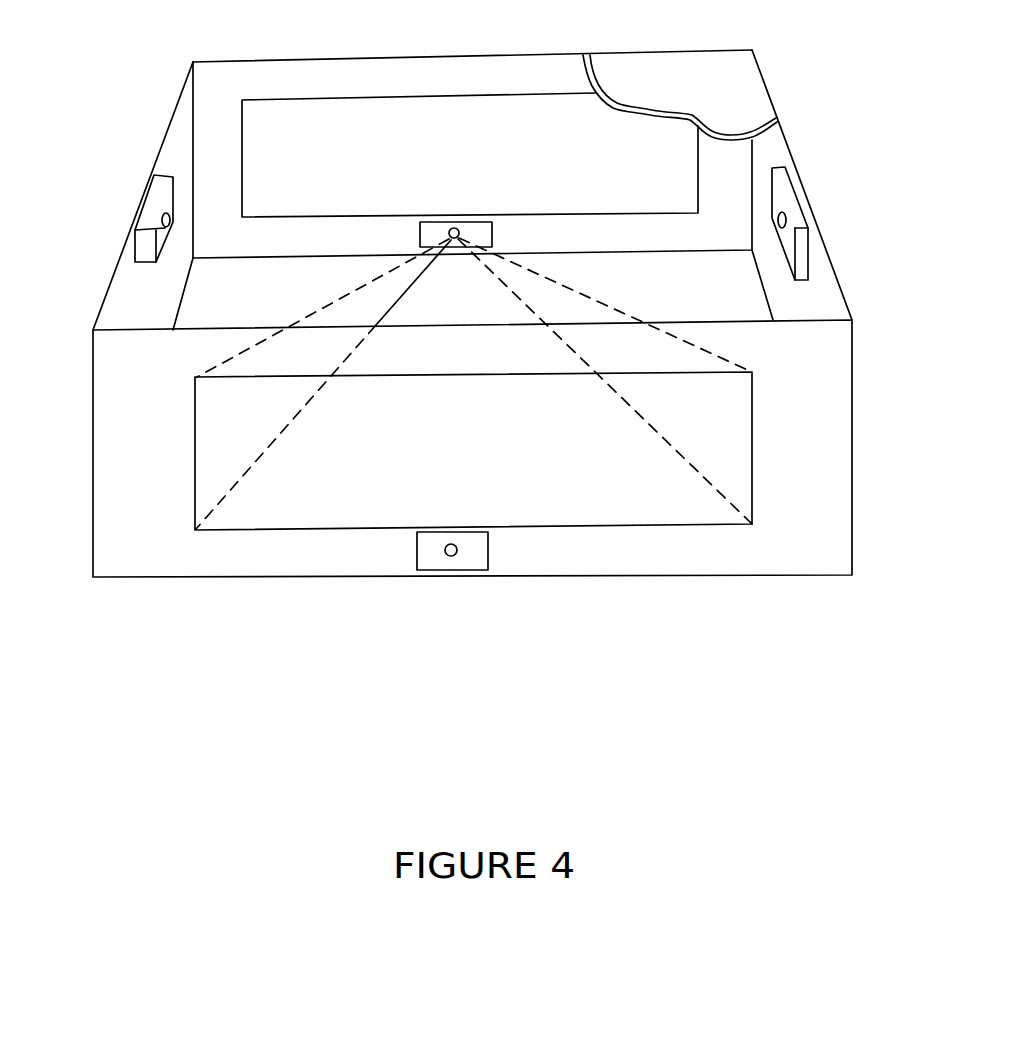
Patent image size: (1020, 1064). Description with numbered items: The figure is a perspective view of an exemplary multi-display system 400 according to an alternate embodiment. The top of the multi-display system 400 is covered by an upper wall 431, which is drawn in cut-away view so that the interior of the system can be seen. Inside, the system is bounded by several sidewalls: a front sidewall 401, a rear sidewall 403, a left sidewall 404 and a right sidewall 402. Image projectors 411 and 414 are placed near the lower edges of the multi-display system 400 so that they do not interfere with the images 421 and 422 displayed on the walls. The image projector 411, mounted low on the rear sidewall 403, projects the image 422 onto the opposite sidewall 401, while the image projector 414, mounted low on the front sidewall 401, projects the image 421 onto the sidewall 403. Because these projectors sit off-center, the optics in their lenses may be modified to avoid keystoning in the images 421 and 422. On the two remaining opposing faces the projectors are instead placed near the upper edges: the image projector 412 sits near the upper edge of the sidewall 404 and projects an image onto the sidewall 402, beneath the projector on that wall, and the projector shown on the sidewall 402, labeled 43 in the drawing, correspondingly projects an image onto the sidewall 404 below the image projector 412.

The multi-display system 400 is at (486, 376).
The sidewall 401 is at (826, 536).
The sidewall 402 is at (845, 294).
The sidewall 403 is at (239, 58).
The sidewall 404 is at (176, 103).
The image projector 411 is at (418, 236).
The image projector 412 is at (143, 266).
The right sensor 43 is at (797, 284).
The image projector 414 is at (492, 550).
The image 421 is at (400, 154).
The image 422 is at (452, 457).
The upper wall 431 is at (713, 97).